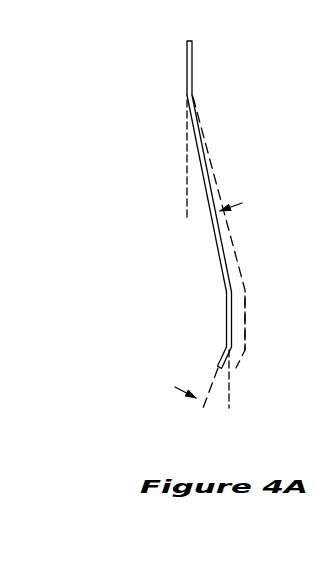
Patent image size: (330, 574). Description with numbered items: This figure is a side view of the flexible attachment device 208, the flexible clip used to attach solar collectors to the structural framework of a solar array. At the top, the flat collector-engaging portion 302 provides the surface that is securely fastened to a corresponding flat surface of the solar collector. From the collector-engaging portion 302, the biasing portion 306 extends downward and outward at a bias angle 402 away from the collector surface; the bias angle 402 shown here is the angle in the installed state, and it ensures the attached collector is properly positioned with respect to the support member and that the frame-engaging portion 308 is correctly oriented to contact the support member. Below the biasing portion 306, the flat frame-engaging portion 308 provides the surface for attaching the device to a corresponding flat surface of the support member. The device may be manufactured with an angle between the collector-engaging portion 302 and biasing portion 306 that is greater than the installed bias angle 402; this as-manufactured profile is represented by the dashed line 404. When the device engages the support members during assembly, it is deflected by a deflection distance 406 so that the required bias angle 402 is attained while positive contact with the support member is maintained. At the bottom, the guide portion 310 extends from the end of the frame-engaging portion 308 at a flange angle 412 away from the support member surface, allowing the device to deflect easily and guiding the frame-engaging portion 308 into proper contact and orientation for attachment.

The flexible attachment device 208 is at (90, 99).
The collector-engaging portion 302 is at (187, 72).
The biasing portion 306 is at (209, 167).
The frame-engaging portion 308 is at (224, 303).
The guide portion 310 is at (225, 352).
The bias angle 402 is at (185, 218).
The line 404 is at (235, 248).
The deflection distance 406 is at (249, 303).
The flange angle 412 is at (233, 405).